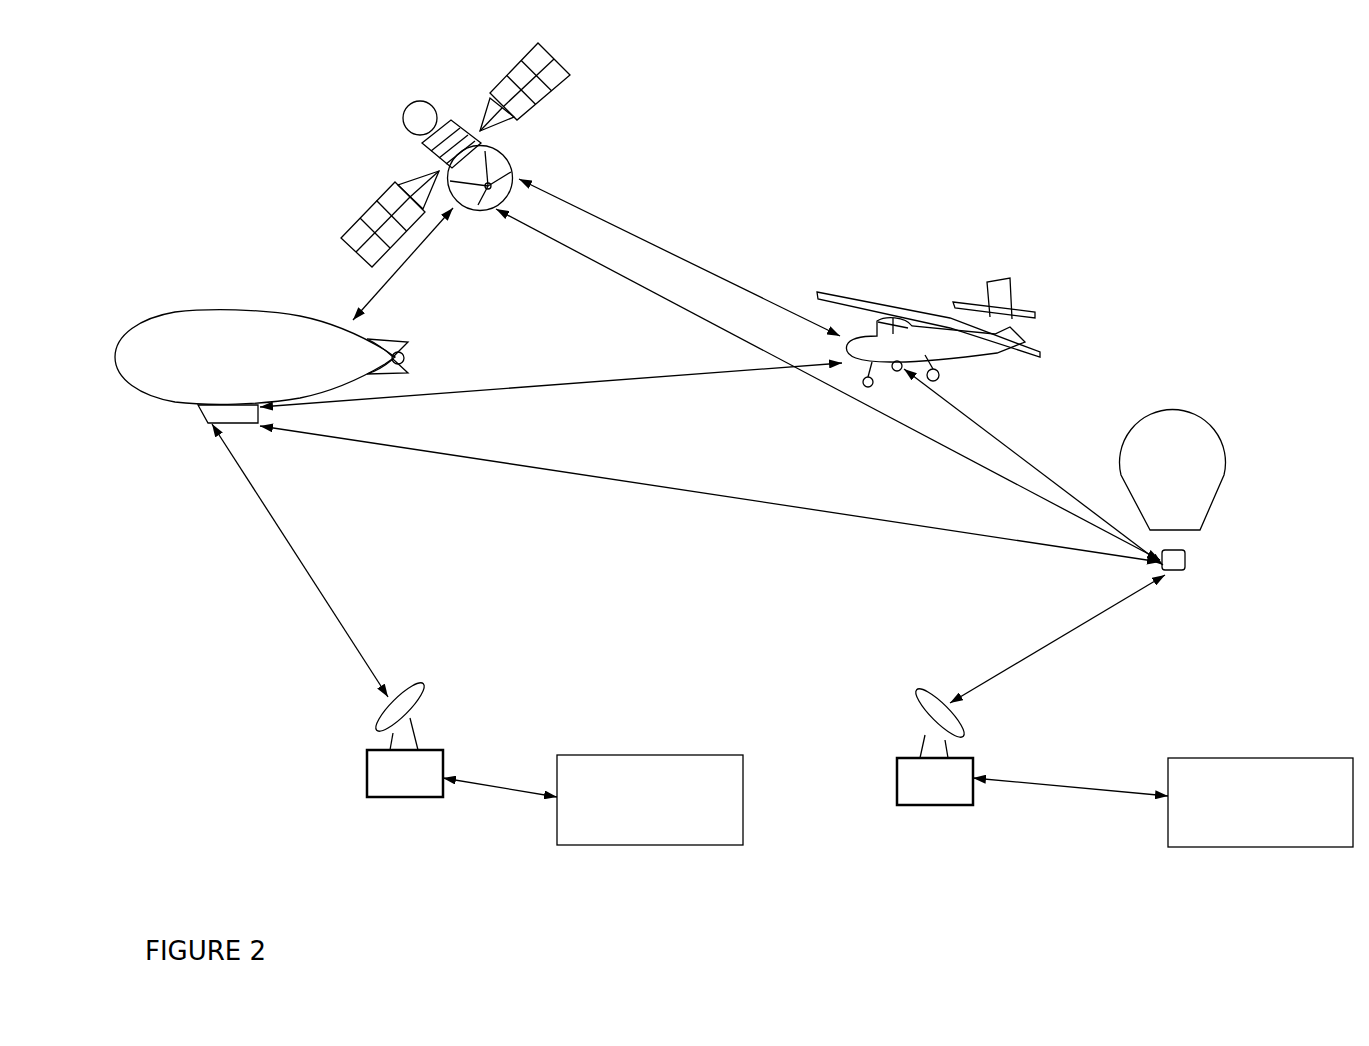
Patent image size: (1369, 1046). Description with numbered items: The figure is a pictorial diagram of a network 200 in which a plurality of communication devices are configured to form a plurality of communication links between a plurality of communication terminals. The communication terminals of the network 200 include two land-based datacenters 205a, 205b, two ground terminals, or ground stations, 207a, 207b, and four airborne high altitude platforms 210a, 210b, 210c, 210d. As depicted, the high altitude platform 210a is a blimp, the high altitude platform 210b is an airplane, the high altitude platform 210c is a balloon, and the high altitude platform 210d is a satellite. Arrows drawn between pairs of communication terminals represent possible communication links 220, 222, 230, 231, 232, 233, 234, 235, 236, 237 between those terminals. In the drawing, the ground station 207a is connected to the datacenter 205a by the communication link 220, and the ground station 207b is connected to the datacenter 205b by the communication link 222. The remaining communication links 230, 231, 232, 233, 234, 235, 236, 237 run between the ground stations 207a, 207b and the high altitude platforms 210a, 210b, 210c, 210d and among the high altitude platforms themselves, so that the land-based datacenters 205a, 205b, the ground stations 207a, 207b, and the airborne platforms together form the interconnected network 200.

The network 200 is at (224, 925).
The land-based datacenter 205a is at (650, 800).
The land-based datacenter 205b is at (1260, 802).
The ground station 207a is at (405, 737).
The ground station 207b is at (935, 744).
The high altitude platform 210a is at (243, 322).
The high altitude platform 210b is at (890, 310).
The high altitude platform 210c is at (1183, 427).
The high altitude platform 210d is at (404, 108).
The communication link 220 is at (500, 799).
The communication link 222 is at (1070, 800).
The communication link 230 is at (300, 560).
The communication link 231 is at (403, 264).
The communication link 232 is at (551, 390).
The communication link 233 is at (710, 494).
The communication link 234 is at (828, 384).
The communication link 235 is at (679, 257).
The communication link 236 is at (1033, 467).
The communication link 237 is at (1057, 639).